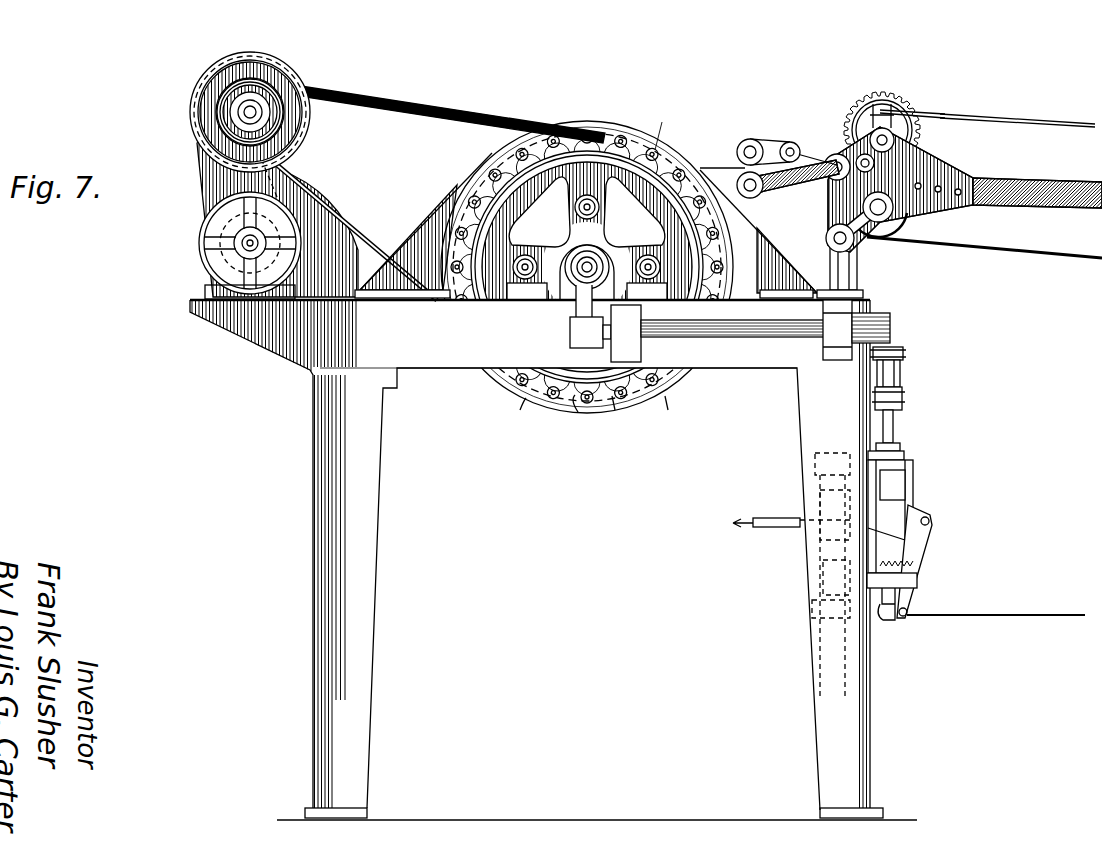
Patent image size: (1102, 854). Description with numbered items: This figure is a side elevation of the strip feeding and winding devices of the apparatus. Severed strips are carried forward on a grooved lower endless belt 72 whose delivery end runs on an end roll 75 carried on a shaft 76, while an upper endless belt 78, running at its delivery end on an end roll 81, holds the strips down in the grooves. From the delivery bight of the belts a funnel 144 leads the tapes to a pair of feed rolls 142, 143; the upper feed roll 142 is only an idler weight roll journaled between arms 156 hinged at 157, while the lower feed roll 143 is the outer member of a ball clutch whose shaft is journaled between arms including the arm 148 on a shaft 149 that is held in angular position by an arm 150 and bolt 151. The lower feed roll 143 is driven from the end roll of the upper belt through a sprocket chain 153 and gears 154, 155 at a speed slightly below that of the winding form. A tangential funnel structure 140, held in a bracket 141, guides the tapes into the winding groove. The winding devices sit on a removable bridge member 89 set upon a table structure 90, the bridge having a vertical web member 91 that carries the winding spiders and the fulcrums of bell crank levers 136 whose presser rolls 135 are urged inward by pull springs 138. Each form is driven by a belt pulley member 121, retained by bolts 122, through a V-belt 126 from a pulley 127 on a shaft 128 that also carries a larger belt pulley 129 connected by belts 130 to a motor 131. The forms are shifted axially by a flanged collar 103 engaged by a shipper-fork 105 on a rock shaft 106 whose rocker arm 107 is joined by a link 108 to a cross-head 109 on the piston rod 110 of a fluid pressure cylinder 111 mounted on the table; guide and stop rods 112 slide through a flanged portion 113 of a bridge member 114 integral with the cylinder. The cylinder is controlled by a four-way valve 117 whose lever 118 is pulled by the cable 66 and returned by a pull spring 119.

The cable 66 is at (1052, 612).
The lower endless belt 72 is at (1033, 252).
The end roll 75 is at (898, 223).
The shaft 76 is at (873, 222).
The upper endless belt 78 is at (1040, 128).
The end roll 81 is at (917, 122).
The bridge member 89 is at (415, 245).
The table structure 90 is at (446, 372).
The web member 91 is at (583, 121).
The flanged collar 103 is at (596, 250).
The shipper-fork 105 is at (578, 307).
The rock shaft 106 is at (742, 338).
The rocker arm 107 is at (900, 345).
The link 108 is at (893, 372).
The cross-head 109 is at (904, 405).
The piston rod 110 is at (895, 432).
The fluid pressure cylinder 111 is at (913, 485).
The guide and stop rods 112 is at (900, 480).
The flanged portion 113 is at (905, 457).
The bridge member 114 is at (905, 540).
The 4-way valve 117 is at (890, 510).
The valve lever 118 is at (915, 598).
The pull spring 119 is at (892, 564).
The belt pulley member 121 is at (520, 415).
The bolts 122 is at (575, 206).
The V-belt 126 is at (410, 100).
The pulley 127 is at (282, 118).
The shaft 128 is at (246, 113).
The belt pulley 129 is at (196, 90).
The belts 130 is at (205, 178).
The motor 131 is at (200, 256).
The presser rolls 135 is at (585, 416).
The bell crank levers 136 is at (681, 412).
The pull springs 138 is at (629, 415).
The funnel structure 140 is at (703, 165).
The bracket 141 is at (670, 125).
The upper feed roll 142 is at (742, 140).
The lower feed roll 143 is at (748, 195).
The funnel 144 is at (767, 170).
The arm 148 is at (807, 175).
The shaft 149 is at (833, 154).
The arm 150 is at (845, 172).
The bolt 151 is at (872, 163).
The sprocket chain 153 is at (812, 157).
The gear 154 is at (828, 155).
The gear 155 is at (888, 90).
The arms 156 is at (768, 145).
The hinge 157 is at (772, 184).